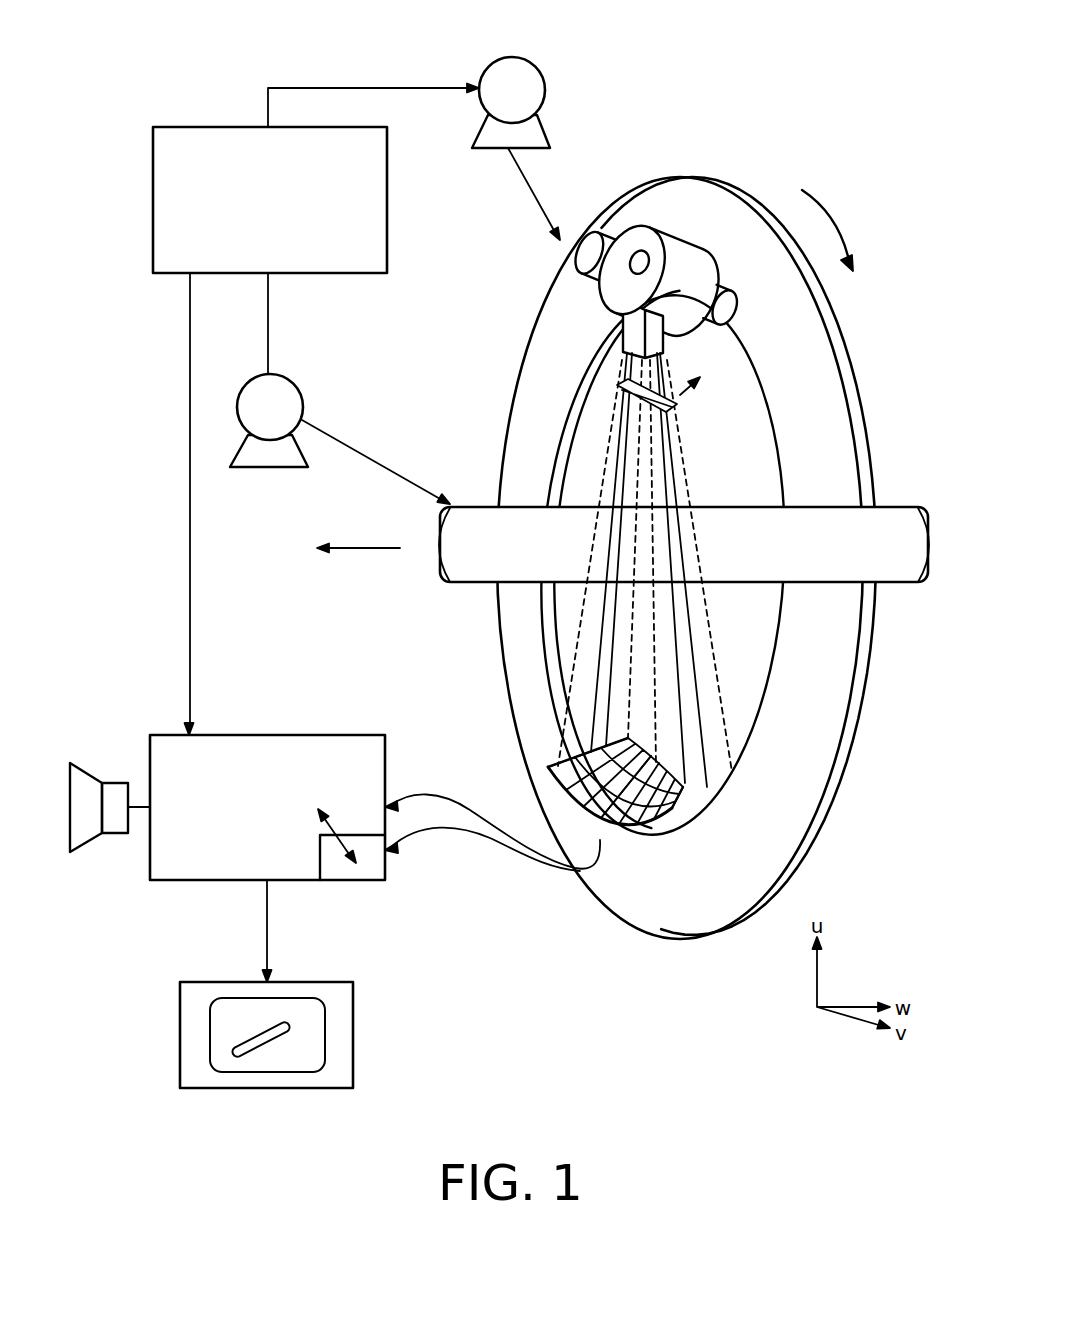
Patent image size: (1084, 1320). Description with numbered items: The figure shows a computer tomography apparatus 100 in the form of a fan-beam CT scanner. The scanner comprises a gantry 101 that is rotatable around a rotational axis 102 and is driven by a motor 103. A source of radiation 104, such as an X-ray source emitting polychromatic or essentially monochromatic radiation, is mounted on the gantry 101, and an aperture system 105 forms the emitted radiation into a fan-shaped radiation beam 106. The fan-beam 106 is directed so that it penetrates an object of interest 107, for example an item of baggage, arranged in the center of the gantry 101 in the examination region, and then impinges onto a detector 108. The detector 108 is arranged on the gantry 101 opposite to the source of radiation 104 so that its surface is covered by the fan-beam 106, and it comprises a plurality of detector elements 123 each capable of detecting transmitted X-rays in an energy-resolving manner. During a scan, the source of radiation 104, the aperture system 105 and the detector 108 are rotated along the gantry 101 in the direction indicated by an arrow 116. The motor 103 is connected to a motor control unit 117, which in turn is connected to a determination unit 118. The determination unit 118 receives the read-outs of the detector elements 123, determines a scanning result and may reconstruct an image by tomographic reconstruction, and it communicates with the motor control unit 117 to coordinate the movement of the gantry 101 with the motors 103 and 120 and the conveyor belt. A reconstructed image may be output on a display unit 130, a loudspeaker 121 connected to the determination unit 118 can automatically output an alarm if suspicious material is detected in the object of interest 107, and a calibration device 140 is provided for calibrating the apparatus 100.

The computer tomography apparatus 100 is at (815, 85).
The gantry 101 is at (843, 722).
The rotational axis 102 is at (358, 547).
The motor 103 is at (546, 82).
The source of radiation 104 is at (677, 237).
The aperture system 105 is at (637, 387).
The fan-shaped radiation beam 106 is at (645, 443).
The object of interest 107 is at (482, 525).
The detector 108 is at (560, 793).
The arrow 116 is at (826, 218).
The motor control unit 117 is at (205, 126).
The determination unit 118 is at (295, 733).
The motor 120 is at (303, 403).
The loudspeaker 121 is at (108, 827).
The detector elements 123 is at (600, 748).
The display unit 130 is at (267, 1090).
The calibration device 140 is at (343, 872).